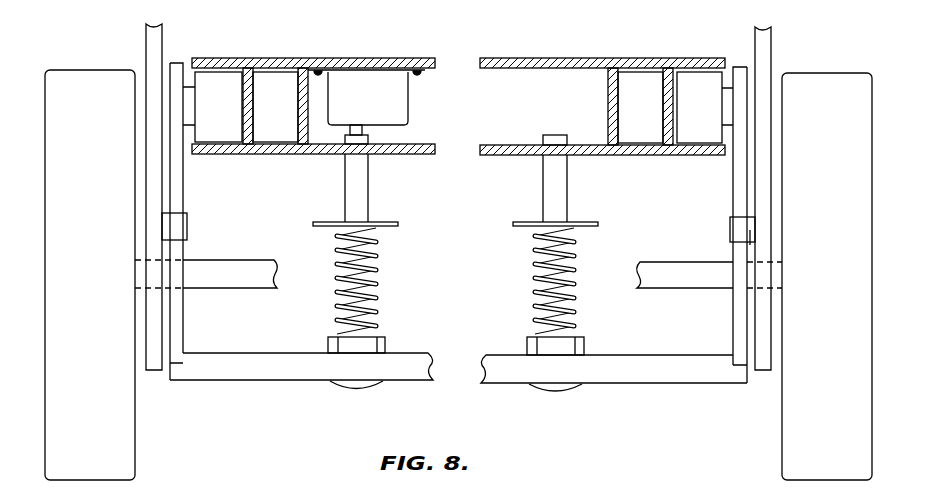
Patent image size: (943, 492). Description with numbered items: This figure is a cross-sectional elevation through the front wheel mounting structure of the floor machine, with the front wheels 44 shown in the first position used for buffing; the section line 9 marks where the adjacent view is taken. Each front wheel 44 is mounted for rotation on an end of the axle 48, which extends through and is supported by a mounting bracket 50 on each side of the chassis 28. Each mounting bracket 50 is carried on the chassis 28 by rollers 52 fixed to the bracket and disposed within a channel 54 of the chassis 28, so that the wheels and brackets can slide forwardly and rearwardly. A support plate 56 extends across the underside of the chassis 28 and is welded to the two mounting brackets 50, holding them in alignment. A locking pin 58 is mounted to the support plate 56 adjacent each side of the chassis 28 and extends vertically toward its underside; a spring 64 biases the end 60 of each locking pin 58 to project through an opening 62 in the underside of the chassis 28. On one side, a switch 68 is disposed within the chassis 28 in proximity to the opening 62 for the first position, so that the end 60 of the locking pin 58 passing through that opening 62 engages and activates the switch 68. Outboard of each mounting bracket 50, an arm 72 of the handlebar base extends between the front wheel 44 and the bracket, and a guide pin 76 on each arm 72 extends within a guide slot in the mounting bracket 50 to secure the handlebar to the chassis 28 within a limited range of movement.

The section line 9- 9 is at (165, 42).
The chassis 28 is at (325, 60).
The front wheel 44 is at (97, 73).
The axle 48 is at (228, 270).
The mounting bracket 50 is at (185, 192).
The roller 52 is at (230, 115).
The channel 54 is at (250, 129).
The support plate 56 is at (281, 372).
The locking pin 58 is at (390, 318).
The end 60 is at (370, 138).
The opening 62 is at (367, 156).
The spring 64 is at (338, 274).
The switch 68 is at (400, 105).
The arm 72 is at (155, 222).
The guide pin 76 is at (165, 228).